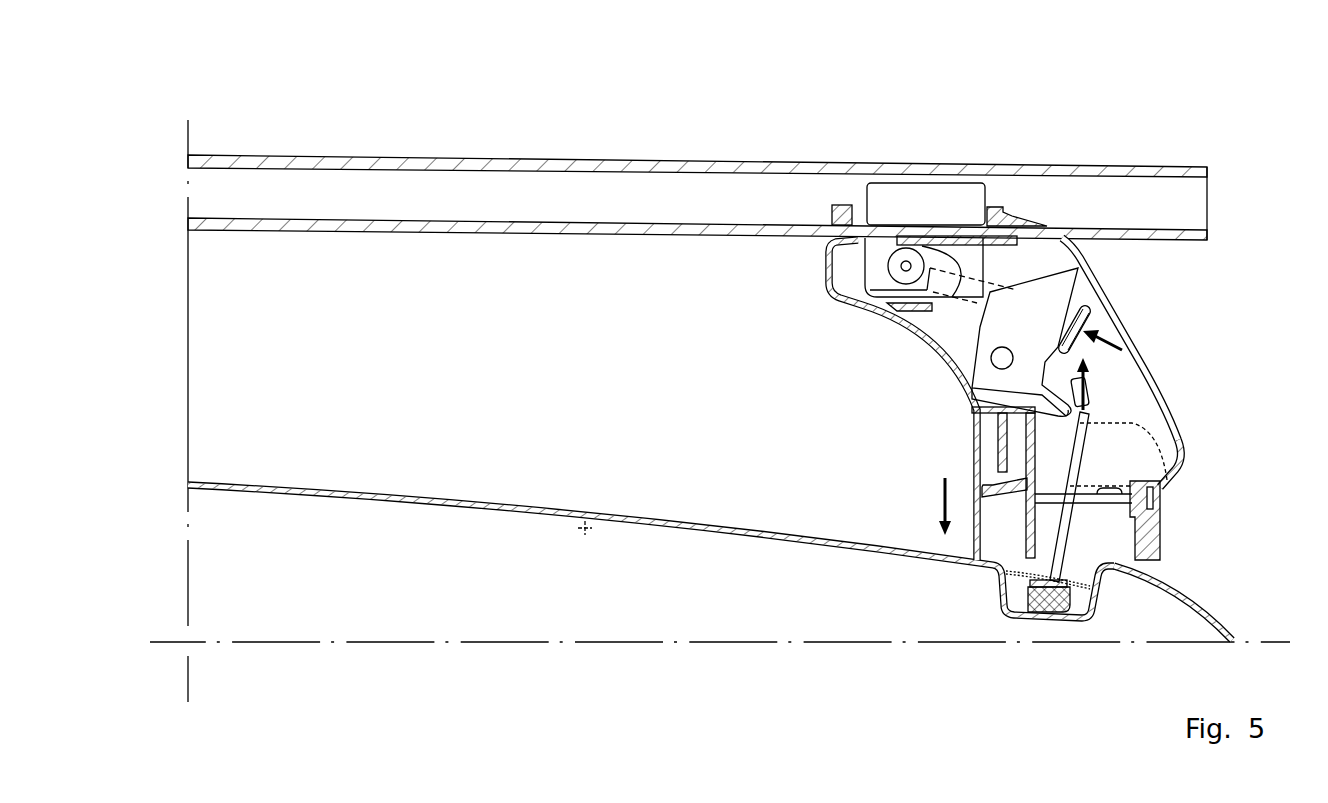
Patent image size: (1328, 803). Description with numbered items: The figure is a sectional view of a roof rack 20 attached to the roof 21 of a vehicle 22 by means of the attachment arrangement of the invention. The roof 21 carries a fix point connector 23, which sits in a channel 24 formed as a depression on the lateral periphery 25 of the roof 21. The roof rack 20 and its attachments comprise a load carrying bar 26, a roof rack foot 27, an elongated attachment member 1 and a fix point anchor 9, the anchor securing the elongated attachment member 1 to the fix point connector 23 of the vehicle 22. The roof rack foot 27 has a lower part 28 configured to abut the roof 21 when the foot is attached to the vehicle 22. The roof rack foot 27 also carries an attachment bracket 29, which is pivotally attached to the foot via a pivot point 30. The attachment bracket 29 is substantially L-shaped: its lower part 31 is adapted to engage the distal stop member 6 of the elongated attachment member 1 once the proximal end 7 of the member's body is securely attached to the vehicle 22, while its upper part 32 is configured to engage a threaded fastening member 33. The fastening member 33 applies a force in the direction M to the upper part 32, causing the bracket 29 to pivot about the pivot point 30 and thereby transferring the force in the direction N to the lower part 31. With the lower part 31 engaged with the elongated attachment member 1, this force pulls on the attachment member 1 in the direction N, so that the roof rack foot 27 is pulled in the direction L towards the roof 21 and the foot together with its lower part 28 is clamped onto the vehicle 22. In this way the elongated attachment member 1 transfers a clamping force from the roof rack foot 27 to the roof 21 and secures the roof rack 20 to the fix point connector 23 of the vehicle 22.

The roof rack 20 is at (1152, 95).
The load carrying bar 26 is at (733, 233).
The roof rack foot 27 is at (1184, 269).
The roof 21 is at (498, 514).
The vehicle 22 is at (607, 596).
The lateral periphery 25 is at (1192, 600).
The lower part 28 is at (970, 550).
The attachment bracket 29 is at (1005, 330).
The pivot point 30 is at (993, 365).
The lower part 31 is at (975, 443).
The upper part 32 is at (1040, 294).
The threaded fastening member 33 is at (1078, 294).
The direction M is at (1101, 349).
The direction N is at (1098, 385).
The direction L is at (943, 503).
The distal stop member 6 is at (1090, 390).
The elongated attachment member 1 is at (1157, 487).
The proximal end 7 is at (1062, 515).
The fix point anchor 9 is at (1037, 580).
The fix point connector 23 is at (1033, 617).
The channel 24 is at (1083, 610).